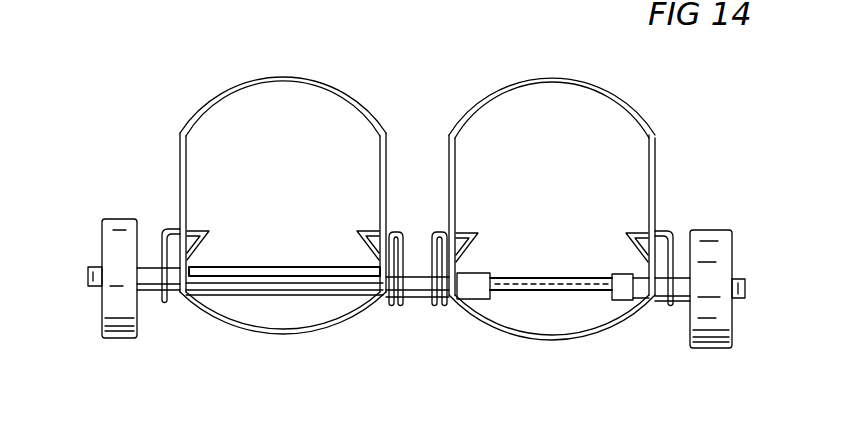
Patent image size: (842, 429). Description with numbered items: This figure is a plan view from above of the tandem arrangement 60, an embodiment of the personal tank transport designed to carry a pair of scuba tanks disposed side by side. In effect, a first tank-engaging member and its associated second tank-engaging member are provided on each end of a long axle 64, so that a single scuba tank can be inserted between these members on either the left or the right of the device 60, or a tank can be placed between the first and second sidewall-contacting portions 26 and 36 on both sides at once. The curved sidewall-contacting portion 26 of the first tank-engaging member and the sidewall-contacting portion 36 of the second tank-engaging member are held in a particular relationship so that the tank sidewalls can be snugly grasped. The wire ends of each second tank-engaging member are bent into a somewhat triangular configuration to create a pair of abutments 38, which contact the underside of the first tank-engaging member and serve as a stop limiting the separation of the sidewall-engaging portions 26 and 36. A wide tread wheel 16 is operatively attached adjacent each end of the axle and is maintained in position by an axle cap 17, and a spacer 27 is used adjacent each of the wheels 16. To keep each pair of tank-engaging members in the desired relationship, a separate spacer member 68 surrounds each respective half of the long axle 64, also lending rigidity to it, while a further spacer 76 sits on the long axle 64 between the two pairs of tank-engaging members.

The wide tread wheel 16 is at (113, 218).
The axle cap 17 is at (88, 277).
The sidewall-contacting portion 26 is at (307, 79).
The spacer 27 is at (152, 291).
The sidewall-contacting portion 36 is at (295, 333).
The abutment 38 is at (206, 231).
The tandem arrangement 60 is at (641, 88).
The long axle 64 is at (572, 278).
The spacer member 68 is at (283, 267).
The spacer 76 is at (415, 303).